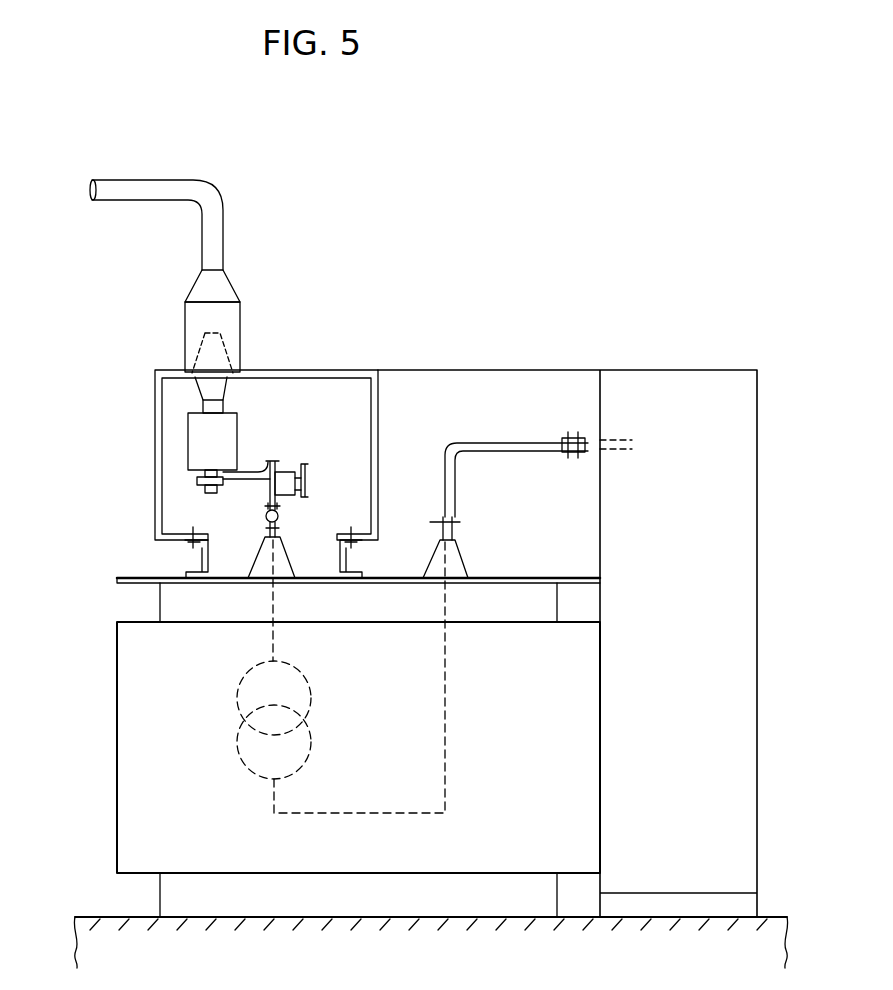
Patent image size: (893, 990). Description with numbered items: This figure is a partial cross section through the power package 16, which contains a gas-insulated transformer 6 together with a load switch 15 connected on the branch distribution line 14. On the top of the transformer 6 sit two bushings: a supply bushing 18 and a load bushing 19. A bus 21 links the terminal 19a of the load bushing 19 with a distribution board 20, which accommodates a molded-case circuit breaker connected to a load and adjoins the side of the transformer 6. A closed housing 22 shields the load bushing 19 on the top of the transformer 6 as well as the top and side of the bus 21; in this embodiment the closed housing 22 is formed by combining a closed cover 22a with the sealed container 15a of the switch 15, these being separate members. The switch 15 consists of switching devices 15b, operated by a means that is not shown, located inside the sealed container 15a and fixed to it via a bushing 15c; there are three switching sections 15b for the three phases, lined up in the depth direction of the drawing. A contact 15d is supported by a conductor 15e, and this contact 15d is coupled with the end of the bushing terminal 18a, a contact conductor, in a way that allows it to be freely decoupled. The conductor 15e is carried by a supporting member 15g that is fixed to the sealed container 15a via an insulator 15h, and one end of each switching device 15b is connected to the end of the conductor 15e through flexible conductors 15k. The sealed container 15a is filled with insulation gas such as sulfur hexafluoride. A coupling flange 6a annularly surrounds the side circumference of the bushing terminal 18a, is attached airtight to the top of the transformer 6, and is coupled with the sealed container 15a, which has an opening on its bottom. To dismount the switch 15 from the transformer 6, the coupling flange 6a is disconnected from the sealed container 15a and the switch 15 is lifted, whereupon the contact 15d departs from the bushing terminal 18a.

The transformer 6 is at (115, 778).
The coupling flange 6a is at (175, 568).
The branch distribution line 14 is at (188, 178).
The switch 15 is at (251, 439).
The sealed container 15a is at (155, 422).
The switching device 15b is at (203, 457).
The bushing 15c is at (232, 387).
The contact 15d is at (268, 528).
The conductor 15e is at (272, 492).
The supporting member 15g is at (305, 467).
The insulator 15h is at (283, 473).
The flexible conductor 15k is at (262, 466).
The power package 16 is at (533, 262).
The supply bushing 18 is at (250, 562).
The bushing terminal 18a is at (200, 543).
The load bushing 19 is at (428, 562).
The terminal 19a is at (443, 517).
The distribution board 20 is at (663, 368).
The bus 21 is at (532, 440).
The closed housing 22 is at (537, 368).
The closed cover 22a is at (563, 368).